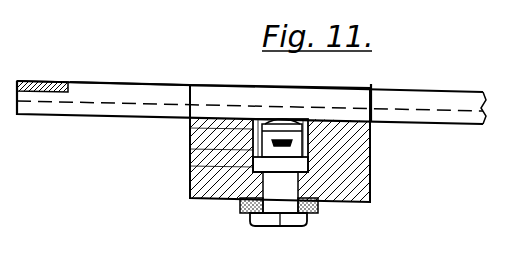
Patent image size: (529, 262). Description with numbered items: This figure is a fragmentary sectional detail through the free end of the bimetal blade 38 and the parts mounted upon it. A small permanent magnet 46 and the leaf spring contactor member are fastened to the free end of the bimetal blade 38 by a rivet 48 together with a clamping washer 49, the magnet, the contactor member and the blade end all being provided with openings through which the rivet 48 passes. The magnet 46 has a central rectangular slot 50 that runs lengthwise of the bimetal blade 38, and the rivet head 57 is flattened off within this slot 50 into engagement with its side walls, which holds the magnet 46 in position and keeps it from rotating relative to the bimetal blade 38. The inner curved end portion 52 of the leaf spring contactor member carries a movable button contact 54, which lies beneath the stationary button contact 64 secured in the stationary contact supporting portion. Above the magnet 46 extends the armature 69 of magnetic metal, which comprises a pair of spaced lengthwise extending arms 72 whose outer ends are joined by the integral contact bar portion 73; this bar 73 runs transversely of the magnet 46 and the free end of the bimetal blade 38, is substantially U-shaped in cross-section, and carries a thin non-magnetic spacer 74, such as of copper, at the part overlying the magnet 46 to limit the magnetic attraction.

The lengthwise extending arms 72 is at (42, 82).
The armature member 69 is at (156, 88).
The stationary button contact 64 is at (277, 124).
The non-magnetic spacer 74 is at (336, 84).
The contact bar portion 73 is at (376, 96).
The movable button contact 54 is at (215, 128).
The curved end portion 52 is at (215, 149).
The rivet head 57 is at (220, 166).
The central rectangular slot 50 is at (362, 146).
The rivet 48 is at (352, 180).
The permanent magnet 46 is at (318, 205).
The bimetal blade 38 is at (240, 210).
The clamping washer 49 is at (281, 222).